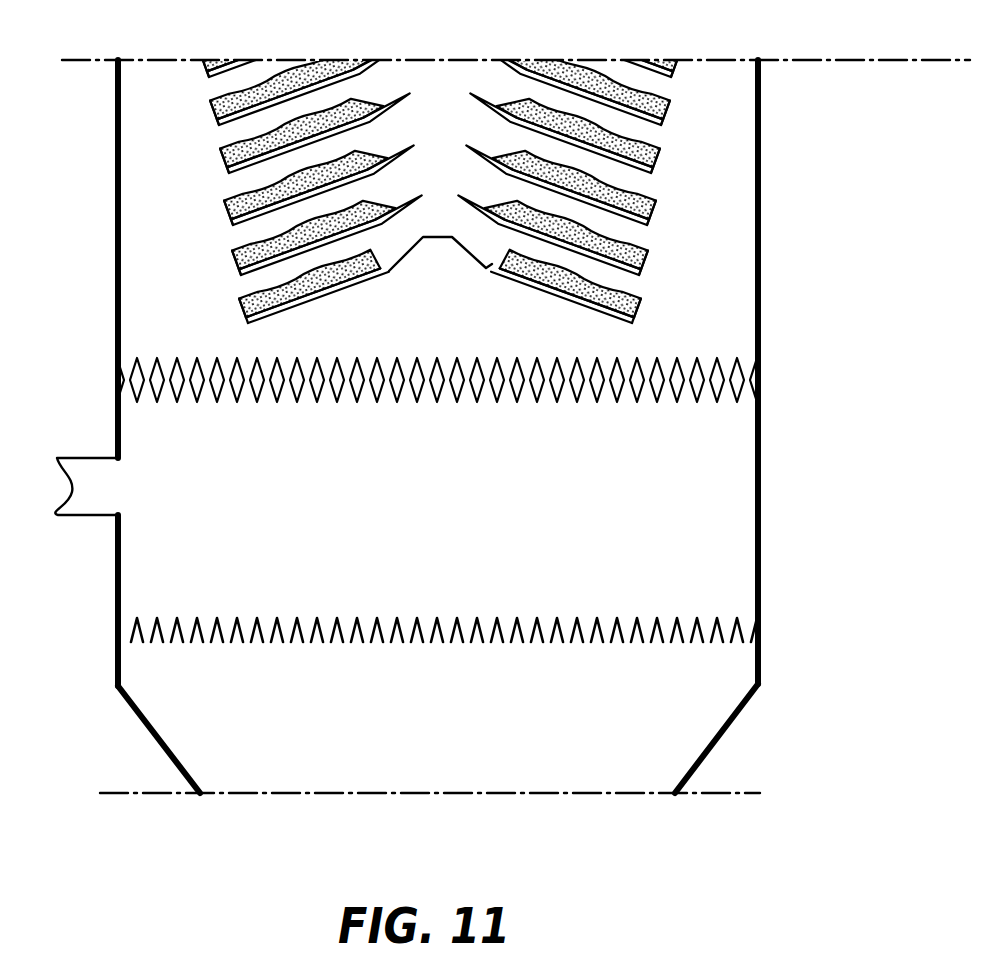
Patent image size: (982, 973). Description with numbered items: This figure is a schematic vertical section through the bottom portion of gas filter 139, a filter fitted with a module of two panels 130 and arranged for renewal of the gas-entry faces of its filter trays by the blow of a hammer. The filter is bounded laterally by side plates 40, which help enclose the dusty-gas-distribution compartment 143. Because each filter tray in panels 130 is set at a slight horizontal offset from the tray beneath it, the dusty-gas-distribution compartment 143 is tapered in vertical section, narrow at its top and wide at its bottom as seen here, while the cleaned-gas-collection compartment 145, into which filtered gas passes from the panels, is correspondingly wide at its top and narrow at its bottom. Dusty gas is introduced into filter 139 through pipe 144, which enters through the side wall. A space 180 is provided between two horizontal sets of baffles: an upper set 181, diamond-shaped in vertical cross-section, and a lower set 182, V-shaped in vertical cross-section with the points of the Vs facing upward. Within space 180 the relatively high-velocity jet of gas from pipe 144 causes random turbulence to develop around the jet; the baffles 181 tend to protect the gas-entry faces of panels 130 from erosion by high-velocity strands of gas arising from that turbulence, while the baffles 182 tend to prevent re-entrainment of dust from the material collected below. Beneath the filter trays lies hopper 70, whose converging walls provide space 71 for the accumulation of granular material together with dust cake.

The side plate 40 is at (115, 222).
The hopper 70 is at (702, 753).
The space 71 is at (412, 758).
The panels 130 is at (441, 161).
The filter 139 is at (460, 426).
The dusty-gas-distribution compartment 143 is at (195, 267).
The pipe 144 is at (87, 458).
The cleaned-gas-collection compartment 145 is at (445, 111).
The space 180 is at (437, 500).
The upper set of baffles 181 is at (297, 398).
The lower set of baffles 182 is at (336, 623).